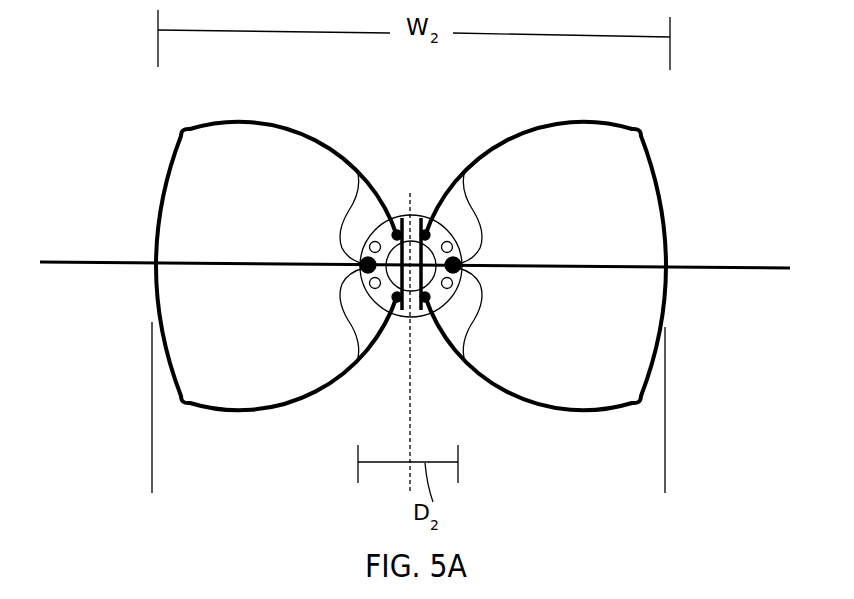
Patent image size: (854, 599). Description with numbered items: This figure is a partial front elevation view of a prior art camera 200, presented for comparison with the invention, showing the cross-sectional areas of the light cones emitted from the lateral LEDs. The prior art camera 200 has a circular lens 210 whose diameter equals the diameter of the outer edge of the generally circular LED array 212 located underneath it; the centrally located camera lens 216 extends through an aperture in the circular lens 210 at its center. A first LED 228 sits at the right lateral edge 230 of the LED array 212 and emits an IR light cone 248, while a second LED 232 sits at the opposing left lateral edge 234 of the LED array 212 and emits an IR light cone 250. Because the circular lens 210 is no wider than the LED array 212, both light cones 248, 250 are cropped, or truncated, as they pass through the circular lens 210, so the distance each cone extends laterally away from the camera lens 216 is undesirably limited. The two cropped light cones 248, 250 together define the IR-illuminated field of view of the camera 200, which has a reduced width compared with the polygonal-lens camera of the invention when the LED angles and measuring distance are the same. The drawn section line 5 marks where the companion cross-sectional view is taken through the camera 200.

The section line 5- 5 is at (40, 262).
The prior art camera 200 is at (412, 330).
The circular lens 210 is at (426, 212).
The LED array 212 is at (403, 205).
The camera lens 216 is at (403, 315).
The first LED 228 is at (465, 362).
The right lateral edge 230 is at (465, 170).
The second LED 232 is at (357, 362).
The left lateral edge 234 is at (357, 170).
The IR light cone 248 is at (667, 217).
The IR light cone 250 is at (157, 208).